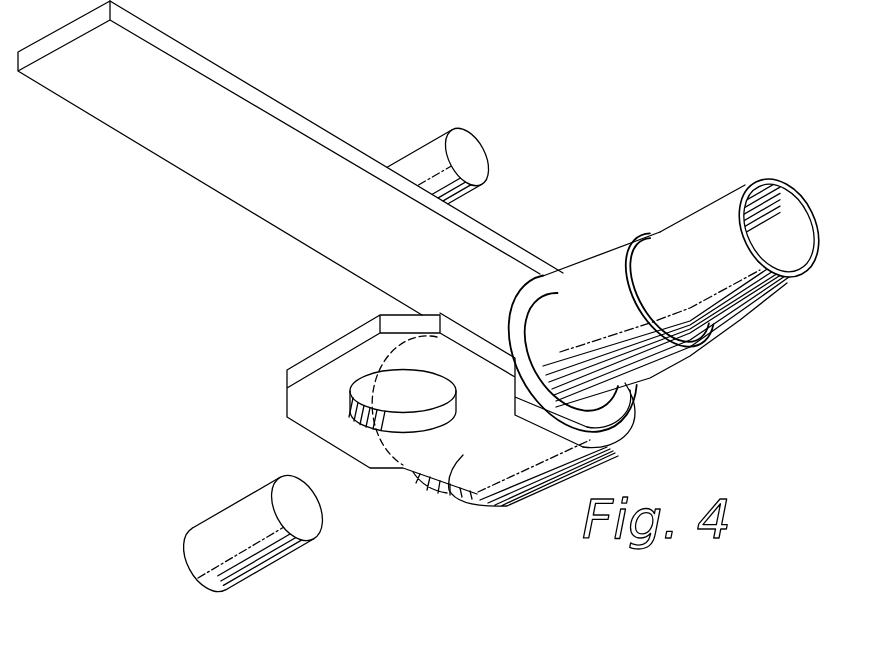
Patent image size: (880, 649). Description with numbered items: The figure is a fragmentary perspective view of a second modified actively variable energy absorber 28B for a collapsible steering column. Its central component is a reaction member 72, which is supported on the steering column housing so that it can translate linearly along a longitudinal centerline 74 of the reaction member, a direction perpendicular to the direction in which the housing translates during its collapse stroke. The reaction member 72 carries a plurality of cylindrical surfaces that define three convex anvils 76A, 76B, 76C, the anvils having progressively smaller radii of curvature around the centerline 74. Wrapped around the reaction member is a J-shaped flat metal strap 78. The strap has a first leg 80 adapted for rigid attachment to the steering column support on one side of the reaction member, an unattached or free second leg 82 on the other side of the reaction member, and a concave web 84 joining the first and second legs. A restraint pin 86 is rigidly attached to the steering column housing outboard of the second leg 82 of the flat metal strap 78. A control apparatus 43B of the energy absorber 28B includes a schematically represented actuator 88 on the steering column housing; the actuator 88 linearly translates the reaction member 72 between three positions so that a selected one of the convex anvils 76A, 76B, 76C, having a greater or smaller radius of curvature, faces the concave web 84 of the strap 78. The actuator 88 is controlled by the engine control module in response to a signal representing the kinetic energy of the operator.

The J-shaped flat metal strap 78 is at (290, 157).
The second leg 82 is at (222, 73).
The restraint pin 86 is at (468, 152).
The second modified actively variable energy absorber 28B is at (560, 329).
The convex anvil 76A is at (512, 396).
The convex anvil 76B is at (588, 278).
The convex anvil 76C is at (688, 265).
The reaction member 72 is at (779, 207).
The longitudinal centerline 74 is at (802, 212).
The concave web 84 is at (634, 414).
The first leg 80 is at (444, 495).
The control apparatus 43B is at (228, 509).
The actuator 88 is at (199, 541).